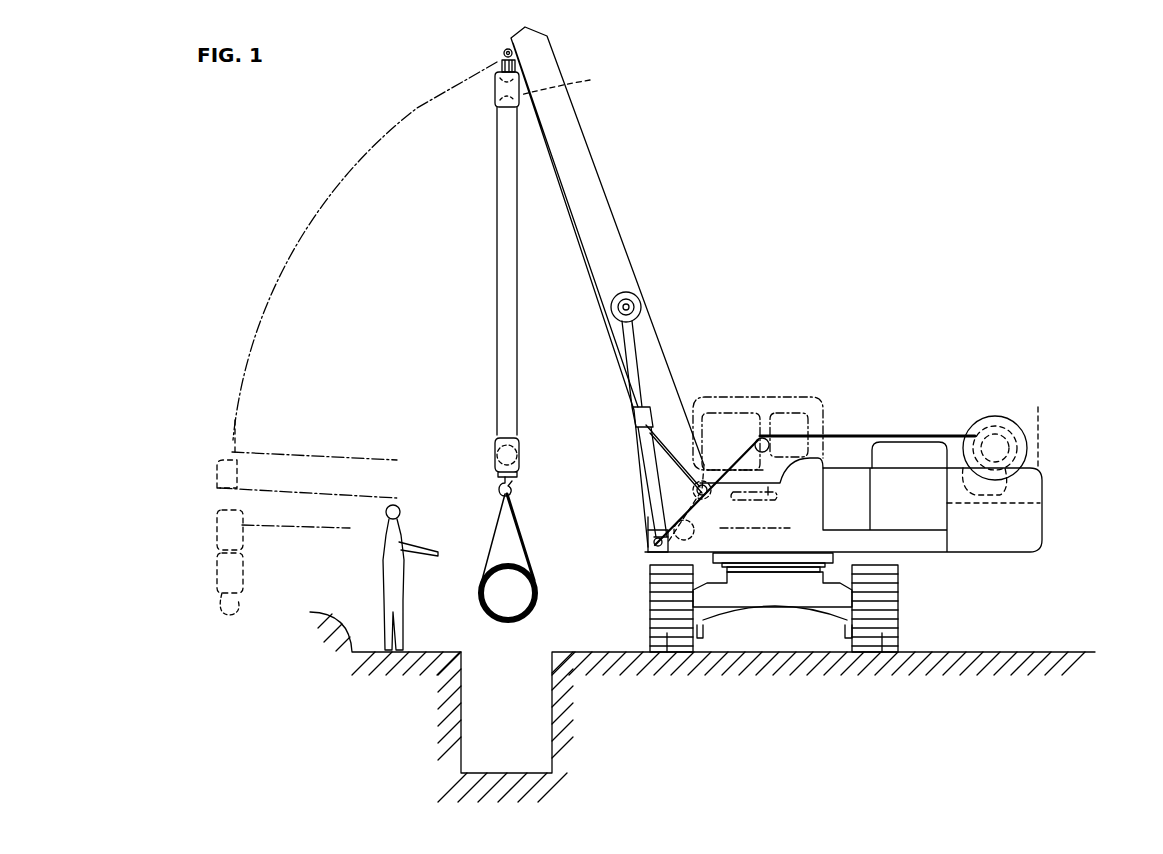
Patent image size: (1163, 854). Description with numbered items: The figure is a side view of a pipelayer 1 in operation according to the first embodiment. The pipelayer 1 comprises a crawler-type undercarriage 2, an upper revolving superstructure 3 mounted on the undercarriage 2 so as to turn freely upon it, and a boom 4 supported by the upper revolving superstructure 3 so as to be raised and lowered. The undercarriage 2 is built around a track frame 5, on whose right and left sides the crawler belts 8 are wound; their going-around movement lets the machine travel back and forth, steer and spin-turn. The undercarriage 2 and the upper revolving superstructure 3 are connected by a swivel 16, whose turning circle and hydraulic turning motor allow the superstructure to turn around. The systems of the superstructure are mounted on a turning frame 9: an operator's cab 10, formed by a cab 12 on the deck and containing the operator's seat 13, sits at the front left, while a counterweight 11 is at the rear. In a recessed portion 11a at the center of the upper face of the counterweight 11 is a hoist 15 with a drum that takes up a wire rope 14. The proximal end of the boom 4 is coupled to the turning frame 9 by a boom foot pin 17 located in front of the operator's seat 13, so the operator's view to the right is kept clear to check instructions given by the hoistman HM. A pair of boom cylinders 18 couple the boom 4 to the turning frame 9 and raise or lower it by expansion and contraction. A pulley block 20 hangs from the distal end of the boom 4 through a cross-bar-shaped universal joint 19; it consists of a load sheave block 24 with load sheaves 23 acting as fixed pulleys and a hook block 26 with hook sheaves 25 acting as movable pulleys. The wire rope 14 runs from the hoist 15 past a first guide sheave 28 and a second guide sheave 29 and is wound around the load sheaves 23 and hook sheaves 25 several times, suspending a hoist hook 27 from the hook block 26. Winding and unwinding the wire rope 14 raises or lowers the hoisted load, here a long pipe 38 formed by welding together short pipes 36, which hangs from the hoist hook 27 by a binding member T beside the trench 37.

The pipelayer 1 is at (943, 227).
The crawler-type undercarriage 2 is at (829, 634).
The upper revolving superstructure 3 is at (775, 370).
The boom 4 is at (565, 306).
The track frame 5 is at (770, 600).
The crawler belts 8 is at (670, 633).
The turning frame 9 is at (690, 492).
The operator's cab 10 is at (738, 397).
The counterweight 11 is at (1042, 510).
The recessed portion 11a is at (1042, 425).
The cab 12 is at (822, 418).
The operator's seat 13 is at (793, 413).
The wire rope 14 is at (905, 435).
The hoist 15 is at (992, 413).
The swivel 16 is at (795, 567).
The boom foot pin 17 is at (693, 490).
The boom cylinders 18 is at (635, 347).
The universal joint 19 is at (497, 67).
The pulley block 20 is at (467, 275).
The load sheaves 23 is at (566, 80).
The load sheave block 24 is at (497, 93).
The hook sheaves 25 is at (488, 455).
The hook block 26 is at (460, 428).
The hoist hook 27 is at (495, 492).
The first guide sheave 28 is at (768, 485).
The second guide sheave 29 is at (657, 553).
The short pipe 36 is at (468, 592).
The trench 37 is at (496, 730).
The long pipe 38 is at (498, 562).
The binding member T is at (525, 547).
The hoistman HM is at (382, 560).